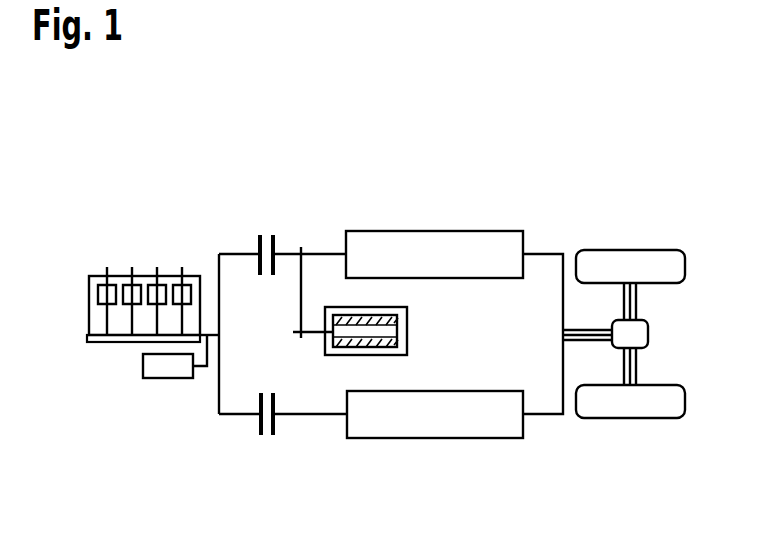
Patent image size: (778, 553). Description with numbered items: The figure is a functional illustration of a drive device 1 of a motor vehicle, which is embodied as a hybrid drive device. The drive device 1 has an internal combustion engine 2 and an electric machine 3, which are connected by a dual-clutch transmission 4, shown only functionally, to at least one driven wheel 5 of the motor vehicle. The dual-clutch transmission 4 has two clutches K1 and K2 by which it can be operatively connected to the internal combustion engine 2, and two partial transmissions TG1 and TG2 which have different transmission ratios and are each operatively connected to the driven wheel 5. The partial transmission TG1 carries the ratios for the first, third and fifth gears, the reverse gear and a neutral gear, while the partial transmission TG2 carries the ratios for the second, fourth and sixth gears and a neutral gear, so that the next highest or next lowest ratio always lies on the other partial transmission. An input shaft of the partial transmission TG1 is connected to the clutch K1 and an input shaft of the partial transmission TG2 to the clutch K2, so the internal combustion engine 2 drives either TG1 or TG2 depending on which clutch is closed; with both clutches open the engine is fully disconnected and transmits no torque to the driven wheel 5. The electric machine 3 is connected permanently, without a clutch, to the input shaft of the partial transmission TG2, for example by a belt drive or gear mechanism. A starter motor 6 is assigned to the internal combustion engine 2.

The drive device 1 is at (130, 205).
The internal combustion engine 2 is at (117, 343).
The electric machine 3 is at (407, 331).
The dual-clutch transmission 4 is at (565, 151).
The driven wheel 5 is at (634, 262).
The starter motor 6 is at (168, 368).
The clutch K1 is at (274, 424).
The clutch K2 is at (273, 241).
The partial transmission TG1 is at (417, 421).
The partial transmission TG2 is at (437, 246).